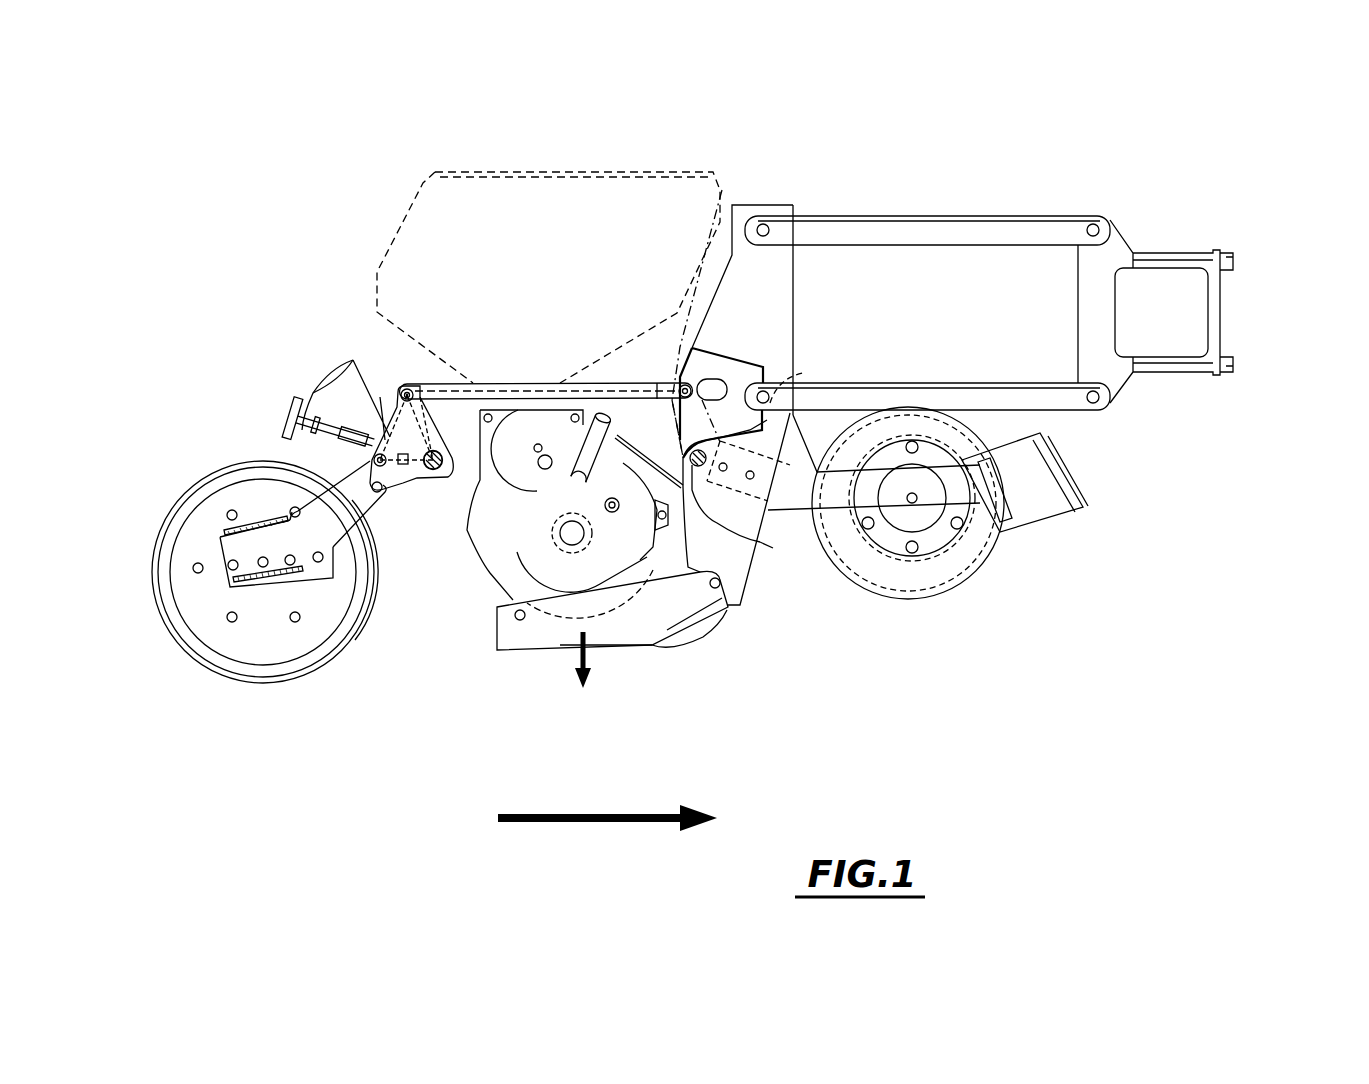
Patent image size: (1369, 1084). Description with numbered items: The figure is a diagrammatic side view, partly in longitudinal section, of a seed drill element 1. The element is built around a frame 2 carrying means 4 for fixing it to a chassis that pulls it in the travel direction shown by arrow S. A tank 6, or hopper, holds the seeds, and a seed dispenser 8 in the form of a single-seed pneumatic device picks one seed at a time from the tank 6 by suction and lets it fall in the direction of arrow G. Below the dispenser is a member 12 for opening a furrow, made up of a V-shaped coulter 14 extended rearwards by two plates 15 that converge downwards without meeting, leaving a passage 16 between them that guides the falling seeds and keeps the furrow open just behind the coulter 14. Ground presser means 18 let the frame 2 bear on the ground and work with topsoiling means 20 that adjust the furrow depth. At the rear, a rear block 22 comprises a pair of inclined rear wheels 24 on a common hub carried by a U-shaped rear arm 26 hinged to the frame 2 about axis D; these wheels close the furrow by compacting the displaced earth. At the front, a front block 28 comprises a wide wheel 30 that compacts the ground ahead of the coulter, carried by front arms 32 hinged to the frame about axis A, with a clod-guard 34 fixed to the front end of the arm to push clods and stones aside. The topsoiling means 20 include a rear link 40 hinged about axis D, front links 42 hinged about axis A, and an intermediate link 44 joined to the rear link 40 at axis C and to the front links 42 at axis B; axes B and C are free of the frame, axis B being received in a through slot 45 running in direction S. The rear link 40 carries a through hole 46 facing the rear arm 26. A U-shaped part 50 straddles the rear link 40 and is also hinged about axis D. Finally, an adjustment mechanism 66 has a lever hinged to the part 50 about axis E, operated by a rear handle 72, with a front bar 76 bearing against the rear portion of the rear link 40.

The seed drill element 1 is at (1250, 297).
The frame 2 is at (780, 273).
The means for fixing to a chassis 4 is at (1015, 216).
The tank 6 is at (413, 213).
The seed dispenser 8 is at (467, 540).
The member for opening a furrow 12 is at (667, 613).
The V-shaped coulter 14 is at (700, 643).
The plates 15 is at (530, 647).
The passage 16 is at (607, 645).
The ground presser means 18 is at (252, 578).
The topsoiling means 20 is at (340, 406).
The rear block 22 is at (188, 657).
The rear wheels 24 is at (258, 630).
The rear arm 26 is at (343, 522).
The front block 28 is at (928, 574).
The wheel 30 is at (977, 550).
The front arms 32 is at (810, 530).
The clod-guard 34 is at (1057, 507).
The rear link 40 is at (437, 438).
The front links 42 is at (778, 400).
The intermediate link 44 is at (520, 395).
The through slot 45 is at (722, 388).
The through hole 46 is at (358, 468).
The U-shaped part 50 is at (338, 362).
The adjustment mechanism 66 is at (324, 403).
The handle 72 is at (288, 414).
The bar 76 is at (385, 385).
The hinge axis A is at (775, 553).
The hinge axis B is at (690, 352).
The hinge axis C is at (403, 385).
The hinge axis D is at (444, 490).
The hinge axis E is at (390, 493).
The arrow G is at (591, 667).
The arrow S is at (607, 808).